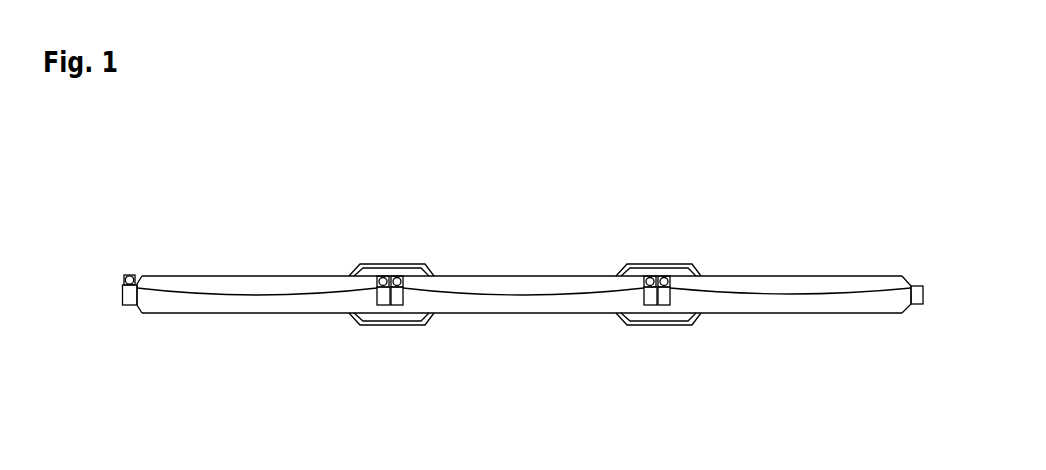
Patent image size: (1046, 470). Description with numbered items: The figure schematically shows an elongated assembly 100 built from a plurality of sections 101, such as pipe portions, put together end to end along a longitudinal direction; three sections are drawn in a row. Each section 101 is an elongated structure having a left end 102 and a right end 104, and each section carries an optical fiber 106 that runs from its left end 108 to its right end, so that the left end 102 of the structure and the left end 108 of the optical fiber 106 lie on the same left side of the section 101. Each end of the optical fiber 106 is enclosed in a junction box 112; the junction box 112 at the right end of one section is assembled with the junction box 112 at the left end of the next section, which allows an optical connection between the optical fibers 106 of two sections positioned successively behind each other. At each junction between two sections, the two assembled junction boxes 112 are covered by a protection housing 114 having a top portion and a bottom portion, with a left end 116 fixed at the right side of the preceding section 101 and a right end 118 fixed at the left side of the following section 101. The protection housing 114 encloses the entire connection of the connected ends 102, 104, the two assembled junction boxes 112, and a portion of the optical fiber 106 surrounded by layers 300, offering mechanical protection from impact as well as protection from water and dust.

The assembly 100 is at (184, 185).
The section 101 is at (812, 305).
The left end 102 is at (130, 306).
The right end 104 is at (383, 305).
The optical fiber 106 is at (275, 294).
The left end of the optical fiber 108 is at (127, 277).
The junction box 112 is at (138, 280).
The protection housing 114 is at (362, 265).
The left end of the protection housing 116 is at (348, 272).
The right end of the protection housing 118 is at (430, 272).
The layers 300 is at (372, 266).